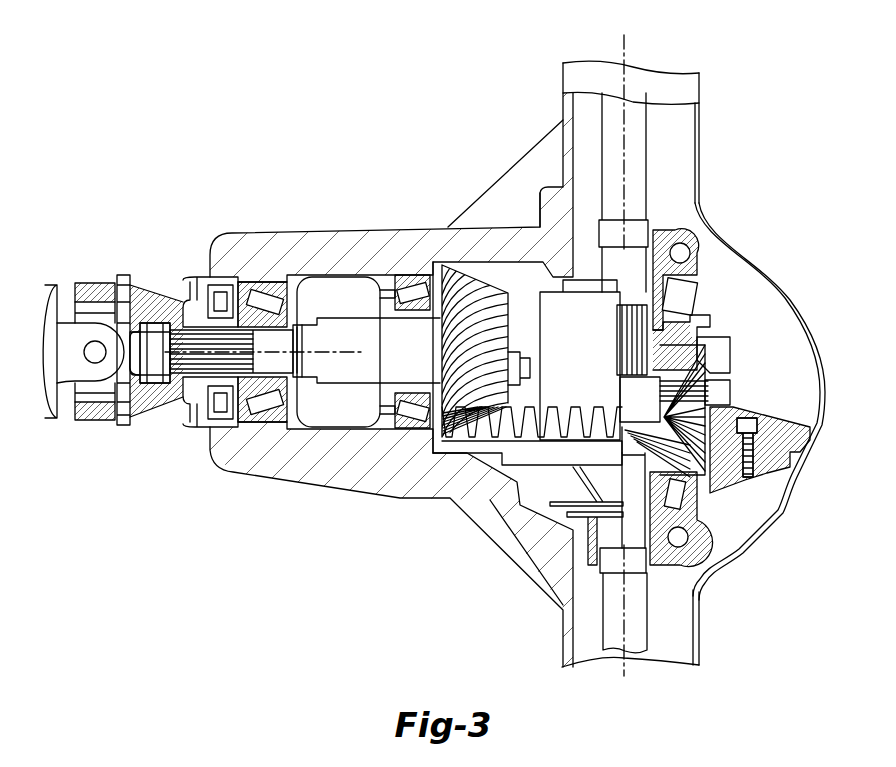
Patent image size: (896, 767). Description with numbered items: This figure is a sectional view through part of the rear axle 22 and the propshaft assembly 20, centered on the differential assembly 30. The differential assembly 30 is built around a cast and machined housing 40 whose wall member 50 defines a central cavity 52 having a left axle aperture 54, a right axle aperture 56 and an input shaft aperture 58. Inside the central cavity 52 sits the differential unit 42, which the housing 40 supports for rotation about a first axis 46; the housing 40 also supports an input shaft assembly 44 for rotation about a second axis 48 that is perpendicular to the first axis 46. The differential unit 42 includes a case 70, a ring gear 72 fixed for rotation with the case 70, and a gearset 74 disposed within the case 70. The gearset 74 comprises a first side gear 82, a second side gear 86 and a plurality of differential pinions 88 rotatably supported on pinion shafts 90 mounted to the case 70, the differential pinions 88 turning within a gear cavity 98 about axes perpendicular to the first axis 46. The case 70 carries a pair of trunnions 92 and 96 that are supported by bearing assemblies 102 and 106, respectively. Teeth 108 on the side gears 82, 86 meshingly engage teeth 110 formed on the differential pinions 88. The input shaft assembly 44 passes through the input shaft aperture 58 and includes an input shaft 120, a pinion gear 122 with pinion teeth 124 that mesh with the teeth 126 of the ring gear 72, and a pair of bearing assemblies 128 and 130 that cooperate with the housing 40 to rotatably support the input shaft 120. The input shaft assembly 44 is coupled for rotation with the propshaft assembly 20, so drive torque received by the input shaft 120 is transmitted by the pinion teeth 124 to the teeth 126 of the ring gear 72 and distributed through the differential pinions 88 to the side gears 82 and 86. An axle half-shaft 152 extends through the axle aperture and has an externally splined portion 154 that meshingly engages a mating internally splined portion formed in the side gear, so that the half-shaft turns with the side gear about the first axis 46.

The propshaft assembly 20 is at (63, 302).
The rear axle 22 is at (356, 122).
The differential assembly 30 is at (748, 193).
The housing 40 is at (392, 224).
The differential unit 42 is at (714, 309).
The input shaft assembly 44 is at (305, 364).
The first axis 46 is at (633, 60).
The second axis 48 is at (358, 352).
The wall member 50 is at (448, 230).
The central cavity 52 is at (780, 385).
The left axle aperture 54 is at (677, 592).
The right axle aperture 56 is at (670, 165).
The input shaft aperture 58 is at (318, 285).
The case 70 is at (608, 300).
The ring gear 72 is at (495, 450).
The gearset 74 is at (752, 366).
The first side gear 82 is at (653, 460).
The second side gear 86 is at (707, 330).
The differential pinions 88 is at (695, 367).
The pinion shafts 90 is at (730, 387).
The trunnion 92 is at (710, 507).
The trunnion 96 is at (703, 297).
The gear cavity 98 is at (630, 393).
The bearing assembly 102 is at (668, 495).
The bearing assembly 106 is at (697, 290).
The teeth 108 is at (647, 440).
The teeth 110 is at (713, 490).
The input shaft 120 is at (400, 334).
The pinion gear 122 is at (513, 310).
The pinion teeth 124 is at (498, 313).
The teeth 126 is at (543, 403).
The bearing assembly 128 is at (402, 302).
The bearing assembly 130 is at (270, 288).
The axle half-shaft 152 is at (635, 123).
The externally splined portion 154 is at (622, 327).